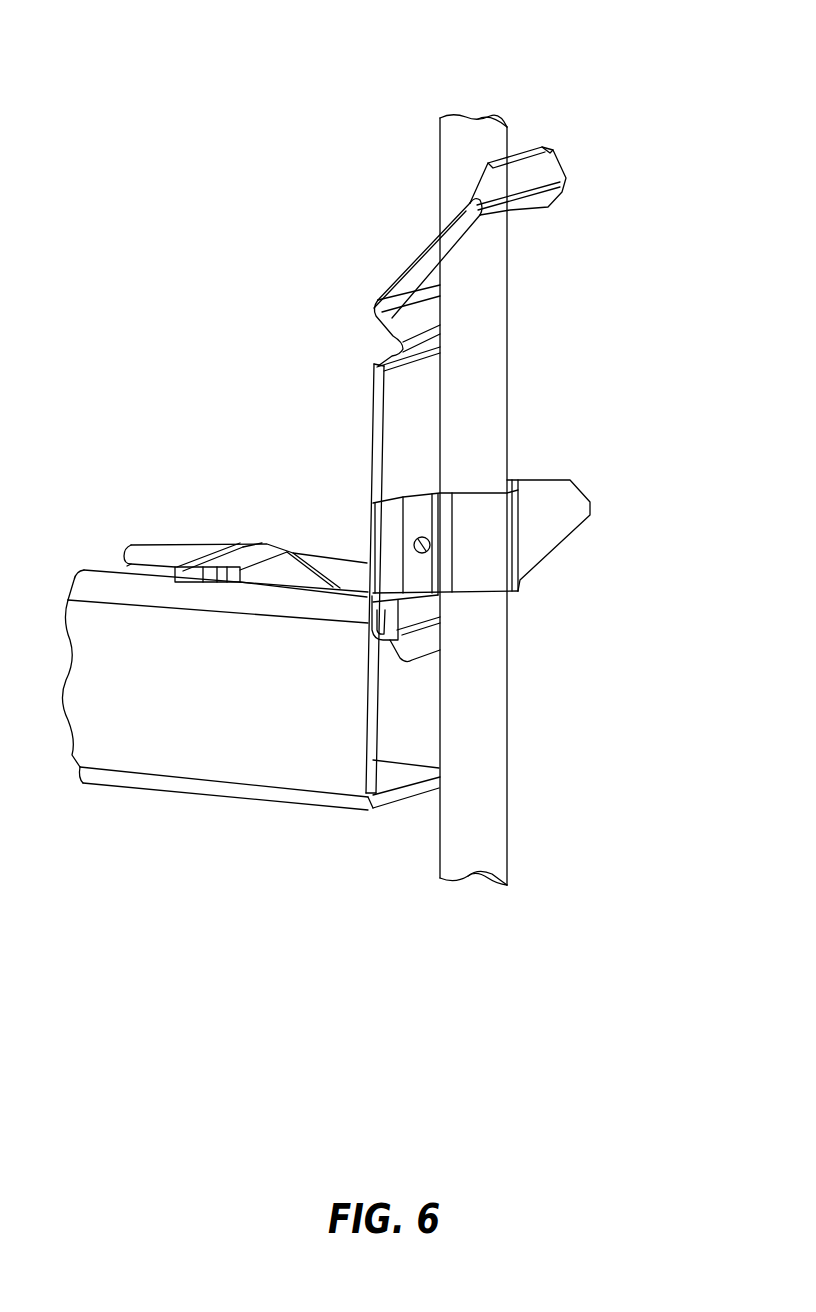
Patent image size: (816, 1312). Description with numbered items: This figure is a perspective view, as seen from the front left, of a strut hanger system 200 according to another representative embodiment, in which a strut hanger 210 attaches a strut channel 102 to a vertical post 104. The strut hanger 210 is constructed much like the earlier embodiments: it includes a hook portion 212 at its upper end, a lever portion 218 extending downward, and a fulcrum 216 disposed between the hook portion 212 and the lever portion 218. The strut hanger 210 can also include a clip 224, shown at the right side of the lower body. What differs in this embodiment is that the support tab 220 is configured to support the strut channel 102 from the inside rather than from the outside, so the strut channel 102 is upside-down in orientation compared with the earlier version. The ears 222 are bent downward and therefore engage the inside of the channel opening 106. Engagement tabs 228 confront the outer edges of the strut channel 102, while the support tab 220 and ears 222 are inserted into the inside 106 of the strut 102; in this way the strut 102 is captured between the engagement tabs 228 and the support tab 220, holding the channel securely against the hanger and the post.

The strut hanger system 200 is at (172, 95).
The post 104 is at (493, 142).
The strut channel 102 is at (217, 758).
The strut hanger 210 is at (240, 262).
The hook portion 212 is at (396, 228).
The fulcrum 216 is at (385, 341).
The lever portion 218 is at (352, 470).
The support tab 220 is at (240, 522).
The ears 222 is at (407, 653).
The clip 224 is at (578, 465).
The engagement tabs 228 is at (278, 550).
The channel opening 106 is at (135, 560).